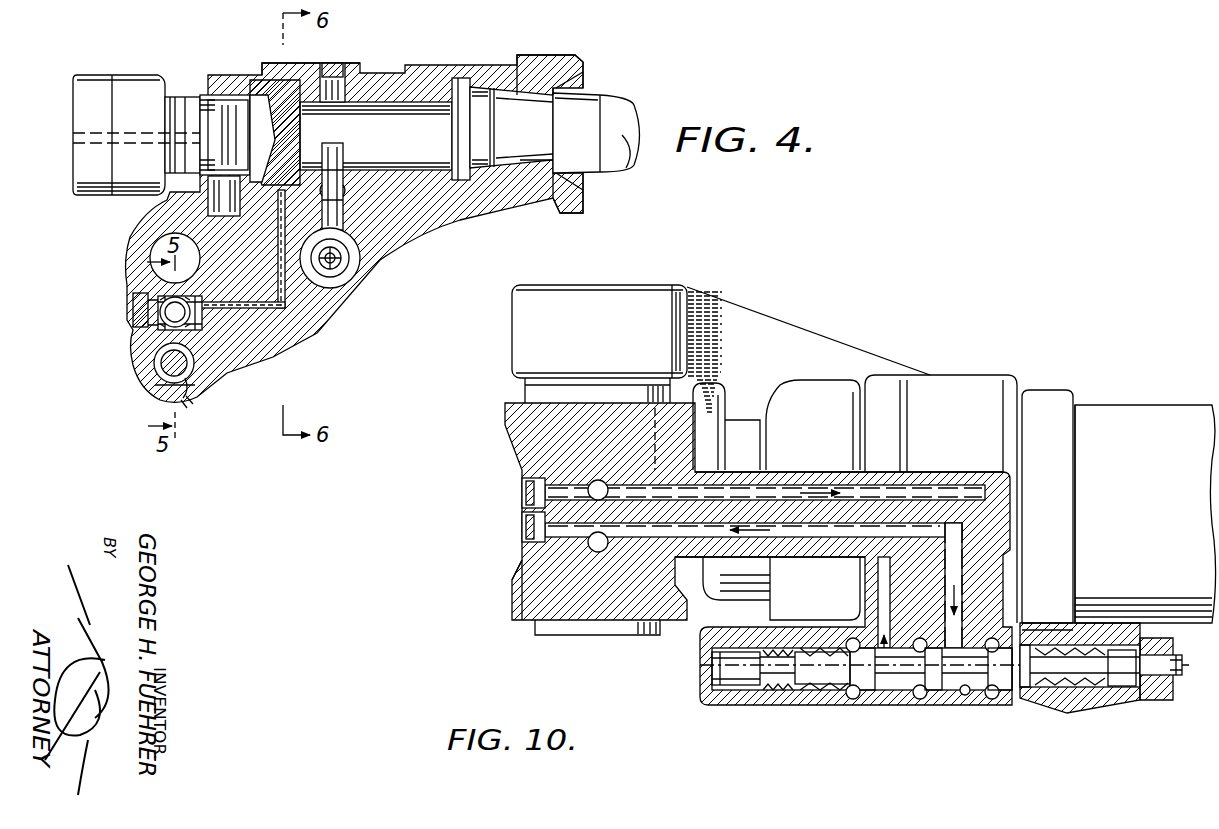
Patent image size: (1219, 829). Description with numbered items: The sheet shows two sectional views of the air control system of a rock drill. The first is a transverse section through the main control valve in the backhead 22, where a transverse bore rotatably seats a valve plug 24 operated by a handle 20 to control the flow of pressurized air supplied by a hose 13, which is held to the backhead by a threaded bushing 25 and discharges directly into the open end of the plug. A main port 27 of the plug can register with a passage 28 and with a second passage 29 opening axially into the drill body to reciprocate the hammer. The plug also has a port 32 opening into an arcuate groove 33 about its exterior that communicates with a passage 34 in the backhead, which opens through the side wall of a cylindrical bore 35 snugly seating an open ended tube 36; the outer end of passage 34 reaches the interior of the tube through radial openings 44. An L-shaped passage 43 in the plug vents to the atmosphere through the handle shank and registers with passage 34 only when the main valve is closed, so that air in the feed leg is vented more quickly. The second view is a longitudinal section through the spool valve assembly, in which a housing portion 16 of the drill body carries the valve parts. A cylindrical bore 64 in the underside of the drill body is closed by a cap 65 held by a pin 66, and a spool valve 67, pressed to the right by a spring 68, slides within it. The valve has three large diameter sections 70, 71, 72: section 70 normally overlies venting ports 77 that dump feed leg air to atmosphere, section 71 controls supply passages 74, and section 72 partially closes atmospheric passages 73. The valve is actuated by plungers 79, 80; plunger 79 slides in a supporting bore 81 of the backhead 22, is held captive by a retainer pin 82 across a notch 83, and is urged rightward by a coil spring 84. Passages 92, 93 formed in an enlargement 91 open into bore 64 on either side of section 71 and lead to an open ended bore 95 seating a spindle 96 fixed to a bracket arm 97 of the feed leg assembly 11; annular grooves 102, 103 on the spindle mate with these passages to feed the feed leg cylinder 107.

In FIG. 4, the handle 20 is at (92, 76).
In FIG. 4, the L-shaped passage 43 is at (178, 135).
In FIG. 4, the valve plug 24 is at (380, 92).
In FIG. 4, the hose 13 is at (595, 117).
In FIG. 4, the threaded bushing 25 is at (586, 197).
In FIG. 4, the port 32 is at (290, 175).
In FIG. 4, the arcuate groove 33 is at (318, 150).
In FIG. 4, the passage 28 is at (345, 142).
In FIG. 4, the main port 27 is at (346, 160).
In FIG. 4, the second passage 29 is at (340, 195).
In FIG. 4, the passage 34 is at (278, 246).
In FIG. 4, the cylindrical bore 35 is at (196, 304).
In FIG. 4, the open ended tube 36 is at (145, 297).
In FIG. 4, the radial openings 44 is at (158, 313).
In FIG. 4, the backhead 22 is at (306, 334).
In FIG. 10, the backhead 22 is at (1100, 710).
In FIG. 4, the supporting bore 81 is at (196, 364).
In FIG. 10, the supporting bore 81 is at (1058, 645).
In FIG. 4, the notch 83 is at (172, 363).
In FIG. 10, the notch 83 is at (1055, 700).
In FIG. 4, the plunger 79 is at (190, 386).
In FIG. 10, the plunger 79 is at (1160, 702).
In FIG. 4, the retainer pin 82 is at (187, 398).
In FIG. 10, the retainer pin 82 is at (1037, 695).
In FIG. 10, the bracket arm 97 is at (828, 335).
In FIG. 10, the feed leg assembly 11 is at (1118, 398).
In FIG. 10, the feed leg cylinder 107 is at (1185, 408).
In FIG. 10, the valve housing 16 is at (505, 456).
In FIG. 10, the annular groove 102 is at (596, 490).
In FIG. 10, the annular groove 103 is at (596, 545).
In FIG. 10, the open ended bore 95 is at (555, 583).
In FIG. 10, the spindle 96 is at (594, 626).
In FIG. 10, the enlargement 91 is at (724, 478).
In FIG. 10, the passage 92 is at (800, 490).
In FIG. 10, the passage 93 is at (862, 530).
In FIG. 10, the venting ports 77 is at (848, 638).
In FIG. 10, the passages 73 is at (988, 638).
In FIG. 10, the actuating plunger 80 is at (1180, 660).
In FIG. 10, the cap 65 is at (728, 688).
In FIG. 10, the pin 66 is at (777, 680).
In FIG. 10, the spool valve 67 is at (805, 688).
In FIG. 10, the spring 68 is at (835, 688).
In FIG. 10, the large diameter section 70 is at (865, 690).
In FIG. 10, the passages 74 is at (918, 700).
In FIG. 10, the large diameter section 71 is at (934, 692).
In FIG. 10, the cylindrical bore 64 is at (965, 696).
In FIG. 10, the large diameter section 72 is at (1002, 692).
In FIG. 10, the coil spring 84 is at (1115, 690).